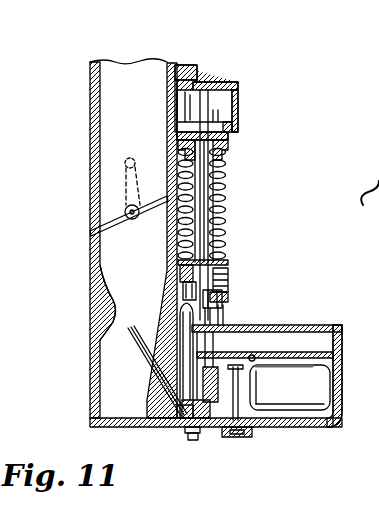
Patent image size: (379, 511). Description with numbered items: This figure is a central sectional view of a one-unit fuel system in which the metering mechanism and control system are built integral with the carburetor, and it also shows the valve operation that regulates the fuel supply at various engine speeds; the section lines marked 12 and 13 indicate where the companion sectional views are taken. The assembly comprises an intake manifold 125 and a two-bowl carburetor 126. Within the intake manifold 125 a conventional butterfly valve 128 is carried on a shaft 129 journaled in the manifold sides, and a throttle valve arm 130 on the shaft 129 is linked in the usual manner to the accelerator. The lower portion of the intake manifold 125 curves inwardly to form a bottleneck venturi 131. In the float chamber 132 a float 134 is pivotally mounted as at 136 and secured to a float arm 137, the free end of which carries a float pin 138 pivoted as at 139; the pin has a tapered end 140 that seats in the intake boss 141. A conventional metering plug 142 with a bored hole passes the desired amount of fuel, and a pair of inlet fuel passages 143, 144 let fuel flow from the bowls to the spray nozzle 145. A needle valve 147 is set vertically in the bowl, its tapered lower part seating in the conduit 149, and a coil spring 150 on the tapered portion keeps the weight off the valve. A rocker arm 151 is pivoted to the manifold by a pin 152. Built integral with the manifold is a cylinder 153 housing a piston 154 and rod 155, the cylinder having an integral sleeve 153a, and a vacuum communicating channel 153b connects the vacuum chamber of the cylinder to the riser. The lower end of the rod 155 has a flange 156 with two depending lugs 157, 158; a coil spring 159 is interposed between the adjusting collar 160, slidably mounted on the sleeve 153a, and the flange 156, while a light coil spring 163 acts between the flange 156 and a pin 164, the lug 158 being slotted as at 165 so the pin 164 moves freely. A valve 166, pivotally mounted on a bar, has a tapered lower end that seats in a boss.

The section line 12- 12 is at (233, 24).
The section line 13- 13 is at (368, 420).
The intake manifold 125 is at (110, 101).
The two-bowl carburetor 126 is at (90, 412).
The butterfly valve 128 is at (92, 228).
The shaft 129 is at (134, 220).
The throttle valve arm 130 is at (155, 151).
The bottleneck venturi 131 is at (117, 315).
The float chamber 132 is at (293, 415).
The float 134 is at (323, 377).
The float pivot 136 is at (253, 366).
The float arm 137 is at (300, 363).
The float pin 138 is at (269, 387).
The float pin pivot 139 is at (248, 356).
The tapered end 140 is at (290, 397).
The intake boss 141 is at (238, 433).
The metering plug 142 is at (190, 438).
The inlet fuel passage 143 is at (202, 428).
The inlet fuel passage 144 is at (188, 431).
The spray nozzle 145 is at (146, 365).
The needle valve 147 is at (180, 308).
The conduit 149 is at (186, 416).
The coil spring 150 is at (163, 382).
The rocker arm 151 is at (183, 286).
The pin 152 is at (184, 296).
The cylinder 153 is at (225, 97).
The sleeve 153a is at (272, 175).
The vacuum communicating channel 153b is at (177, 80).
The piston 154 is at (233, 117).
The rod 155 is at (215, 143).
The flange 156 is at (223, 263).
The depending lug 157 is at (180, 268).
The depending lug 158 is at (226, 273).
The coil spring 159 is at (230, 200).
The adjusting collar 160 is at (228, 157).
The light coil spring 163 is at (228, 290).
The pin 164 is at (222, 298).
The slot 165 is at (223, 318).
The valve 166 is at (187, 318).